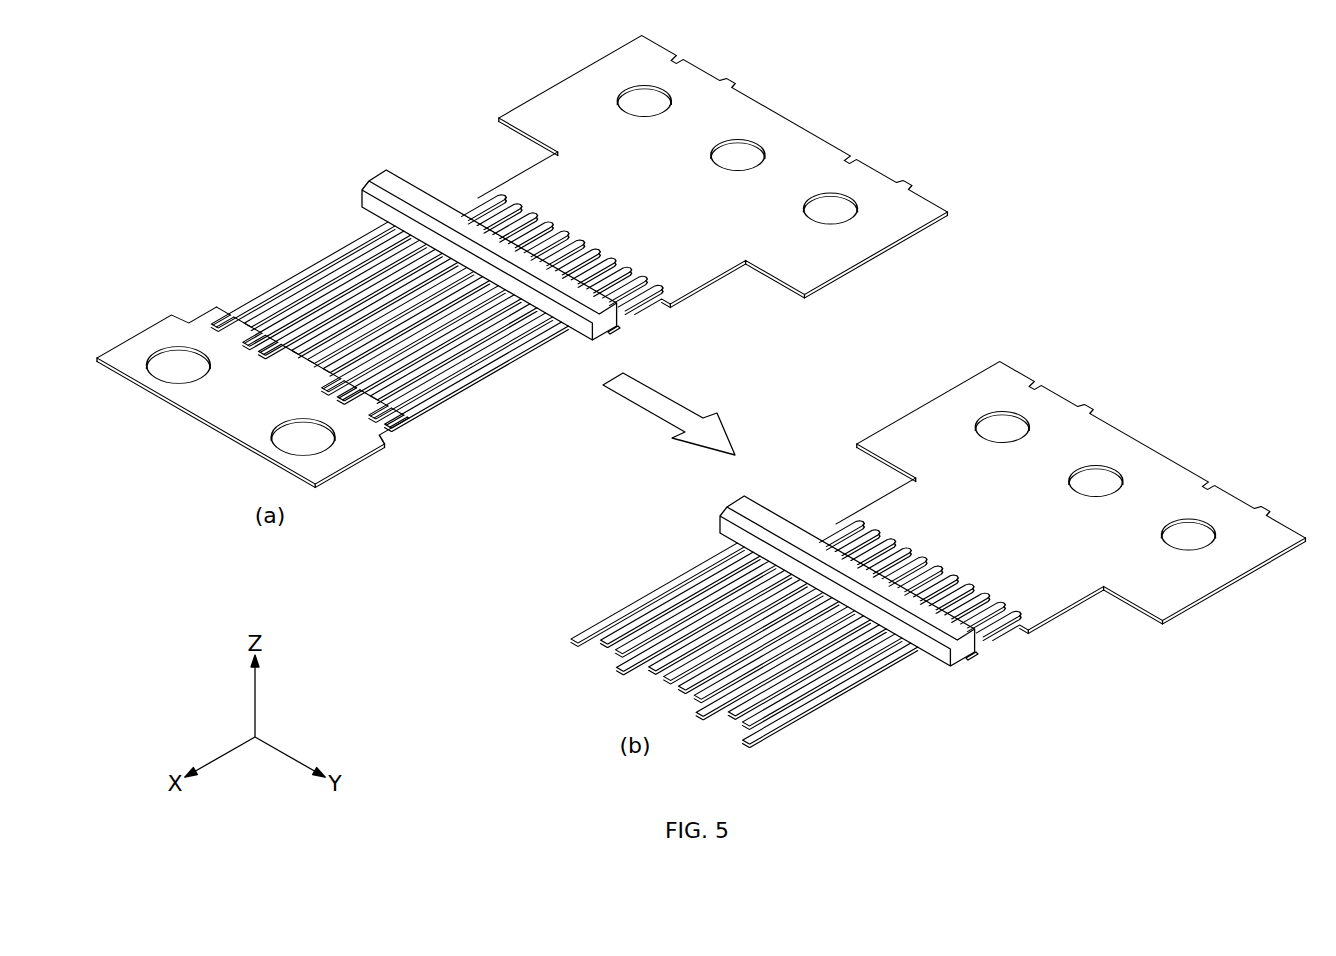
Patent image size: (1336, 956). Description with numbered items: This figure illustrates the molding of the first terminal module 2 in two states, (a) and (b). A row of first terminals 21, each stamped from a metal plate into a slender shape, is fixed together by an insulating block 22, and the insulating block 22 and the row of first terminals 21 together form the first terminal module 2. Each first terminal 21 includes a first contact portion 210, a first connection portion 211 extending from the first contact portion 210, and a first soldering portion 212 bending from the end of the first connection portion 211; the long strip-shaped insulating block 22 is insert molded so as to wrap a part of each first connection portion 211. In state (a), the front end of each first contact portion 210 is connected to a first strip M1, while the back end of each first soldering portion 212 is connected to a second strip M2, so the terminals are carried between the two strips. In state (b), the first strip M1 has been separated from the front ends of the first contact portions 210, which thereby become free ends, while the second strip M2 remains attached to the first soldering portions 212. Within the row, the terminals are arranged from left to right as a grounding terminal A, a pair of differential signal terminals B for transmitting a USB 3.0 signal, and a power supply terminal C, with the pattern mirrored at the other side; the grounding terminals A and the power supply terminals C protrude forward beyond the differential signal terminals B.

The first terminal module 2 is at (628, 456).
The first terminal 21 is at (628, 480).
The insulating block 22 is at (400, 190).
The first contact portion 210 is at (440, 380).
The first connection portion 211 is at (520, 340).
The first soldering portion 212 is at (622, 330).
The first strip M1 is at (340, 455).
The second strip M2 is at (850, 248).
The grounding terminal A is at (568, 640).
The differential signal terminal B is at (600, 644).
The power supply terminal C is at (616, 668).